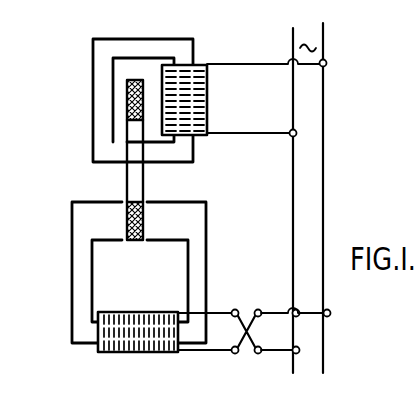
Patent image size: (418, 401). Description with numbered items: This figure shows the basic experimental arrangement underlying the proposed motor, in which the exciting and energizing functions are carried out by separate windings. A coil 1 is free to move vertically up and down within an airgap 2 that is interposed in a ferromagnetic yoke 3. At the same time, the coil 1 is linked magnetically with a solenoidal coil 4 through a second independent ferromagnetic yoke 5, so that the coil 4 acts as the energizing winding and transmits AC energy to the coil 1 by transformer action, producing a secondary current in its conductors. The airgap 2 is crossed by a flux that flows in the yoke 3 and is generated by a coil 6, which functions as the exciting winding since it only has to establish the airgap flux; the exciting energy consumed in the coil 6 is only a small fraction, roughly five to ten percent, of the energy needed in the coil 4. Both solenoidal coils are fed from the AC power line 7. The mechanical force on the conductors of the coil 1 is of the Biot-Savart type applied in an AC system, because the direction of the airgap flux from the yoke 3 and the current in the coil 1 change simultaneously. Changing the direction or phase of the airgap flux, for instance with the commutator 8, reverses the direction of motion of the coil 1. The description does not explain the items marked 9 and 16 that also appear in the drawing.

The coil 1 is at (128, 107).
The airgap 2 is at (123, 243).
The ferromagnetic yoke 3 is at (206, 215).
The solenoidal coil 4 is at (205, 121).
The second independent ferromagnetic yoke 5 is at (157, 38).
The coil 6 is at (143, 353).
The AC power line 7 is at (317, 198).
The commutator 8 is at (278, 316).
The lead 9 is at (412, 343).
The lead 16 is at (229, 394).